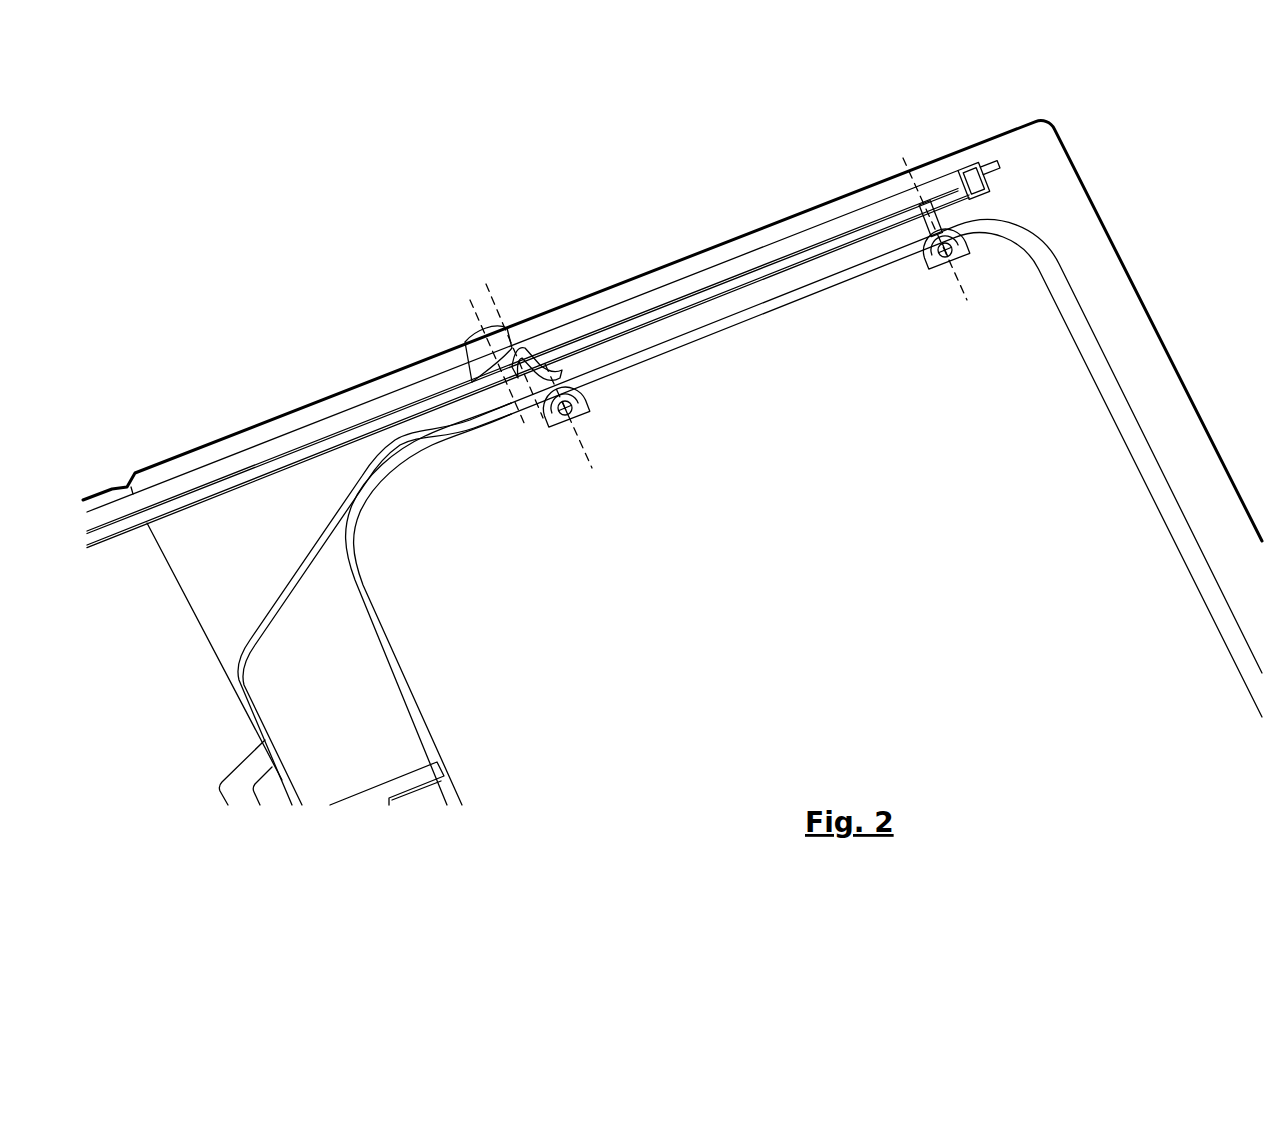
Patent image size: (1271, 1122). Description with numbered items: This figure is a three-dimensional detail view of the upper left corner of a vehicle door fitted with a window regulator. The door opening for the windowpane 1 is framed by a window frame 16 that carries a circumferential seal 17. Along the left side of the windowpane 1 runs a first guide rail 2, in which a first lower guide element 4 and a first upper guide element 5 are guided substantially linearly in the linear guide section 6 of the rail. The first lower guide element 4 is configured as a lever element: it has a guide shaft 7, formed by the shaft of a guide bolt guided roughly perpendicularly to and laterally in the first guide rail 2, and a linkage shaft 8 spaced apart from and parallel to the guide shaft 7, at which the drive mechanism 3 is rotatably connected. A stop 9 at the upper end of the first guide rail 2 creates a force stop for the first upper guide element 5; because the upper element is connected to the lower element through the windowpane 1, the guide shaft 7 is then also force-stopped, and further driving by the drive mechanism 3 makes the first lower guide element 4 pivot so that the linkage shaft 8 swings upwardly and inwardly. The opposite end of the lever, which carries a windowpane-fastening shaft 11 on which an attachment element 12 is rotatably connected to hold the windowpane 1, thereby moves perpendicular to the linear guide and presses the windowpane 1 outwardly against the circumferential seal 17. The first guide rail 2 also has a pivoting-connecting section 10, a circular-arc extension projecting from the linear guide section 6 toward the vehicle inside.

The windowpane 1 is at (1092, 500).
The first guide rail 2 is at (528, 359).
The drive mechanism 3 is at (267, 617).
The first lower guide element 4 is at (563, 369).
The first upper guide element 5 is at (955, 192).
The linear guide section 6 is at (348, 418).
The guide shaft 7 is at (485, 353).
The linkage shaft 8 is at (503, 335).
The stop 9 is at (987, 165).
The pivoting-connecting section 10 is at (477, 345).
The windowpane-fastening shaft 11 is at (766, 331).
The attachment element 12 is at (565, 430).
The window frame 16 is at (1100, 332).
The circumferential seal 17 is at (1107, 393).